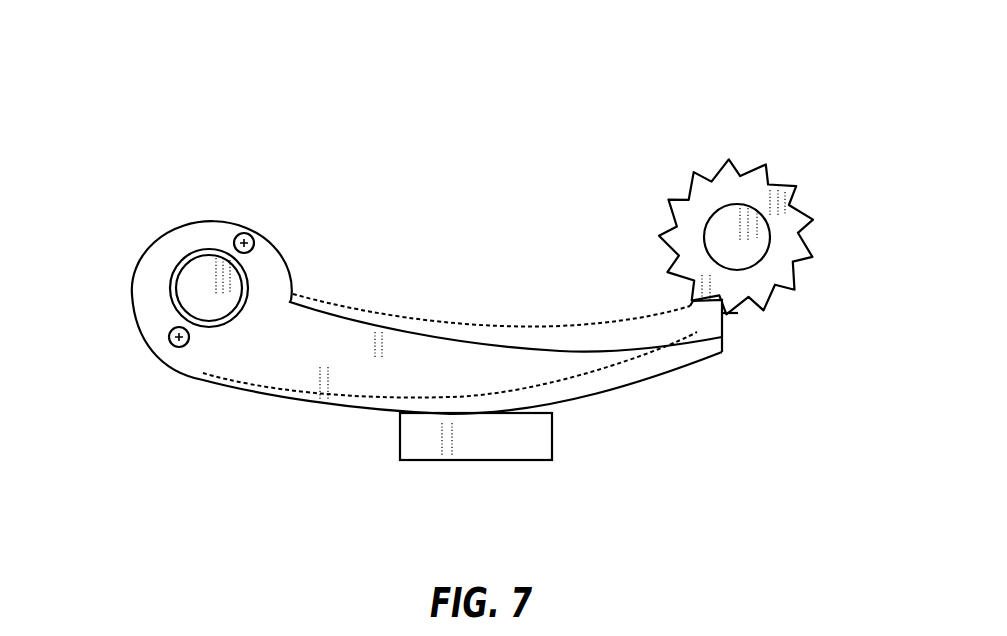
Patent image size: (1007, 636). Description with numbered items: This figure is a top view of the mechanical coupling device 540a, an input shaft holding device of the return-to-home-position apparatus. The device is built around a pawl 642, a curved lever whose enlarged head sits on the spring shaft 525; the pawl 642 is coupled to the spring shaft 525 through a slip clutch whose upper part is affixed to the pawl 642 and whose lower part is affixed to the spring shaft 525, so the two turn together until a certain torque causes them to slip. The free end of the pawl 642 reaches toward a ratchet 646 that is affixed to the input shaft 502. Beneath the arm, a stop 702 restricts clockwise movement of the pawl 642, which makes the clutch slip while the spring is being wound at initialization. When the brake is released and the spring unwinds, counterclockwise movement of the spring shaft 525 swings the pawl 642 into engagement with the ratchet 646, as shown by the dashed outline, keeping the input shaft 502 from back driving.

The mechanical coupling device 540a is at (320, 478).
The pawl 642 is at (202, 228).
The spring shaft 525 is at (176, 287).
The ratchet 646 is at (753, 170).
The input shaft 502 is at (760, 237).
The stop 702 is at (493, 460).